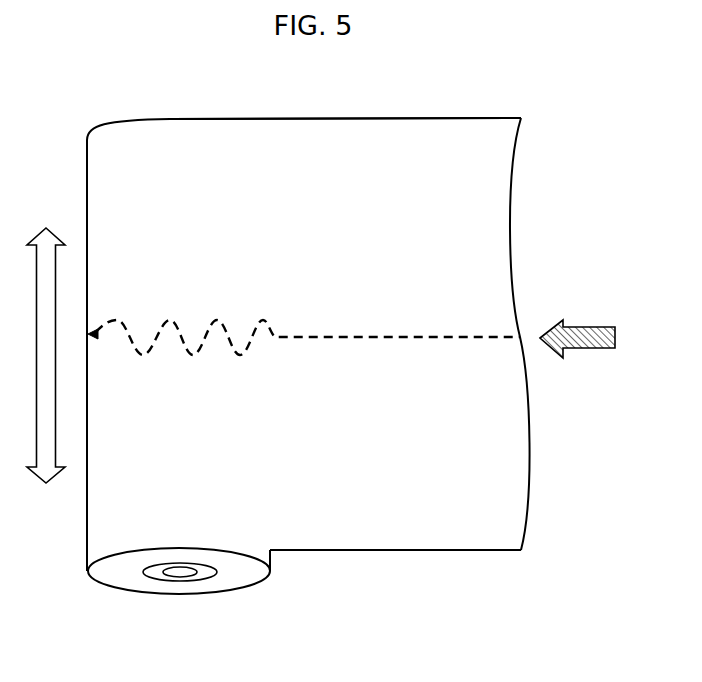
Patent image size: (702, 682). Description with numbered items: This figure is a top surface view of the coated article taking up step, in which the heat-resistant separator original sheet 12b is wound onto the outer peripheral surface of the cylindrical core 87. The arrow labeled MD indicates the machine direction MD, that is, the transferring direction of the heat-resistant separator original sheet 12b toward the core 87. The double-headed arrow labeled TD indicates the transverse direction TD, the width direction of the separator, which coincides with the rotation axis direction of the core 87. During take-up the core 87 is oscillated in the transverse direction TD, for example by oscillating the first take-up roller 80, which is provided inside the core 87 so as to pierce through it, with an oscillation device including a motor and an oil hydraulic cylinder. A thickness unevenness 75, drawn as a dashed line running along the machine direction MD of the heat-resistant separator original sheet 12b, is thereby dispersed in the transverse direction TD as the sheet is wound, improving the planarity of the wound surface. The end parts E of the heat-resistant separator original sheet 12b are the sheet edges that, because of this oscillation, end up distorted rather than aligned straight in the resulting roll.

The heat-resistant separator original sheet 12b is at (433, 126).
The end parts E is at (340, 117).
The thickness unevenness 75 is at (468, 338).
The first take-up roller 80 is at (180, 577).
The core 87 is at (207, 577).
The transverse direction TD is at (46, 359).
The machine direction MD is at (588, 327).